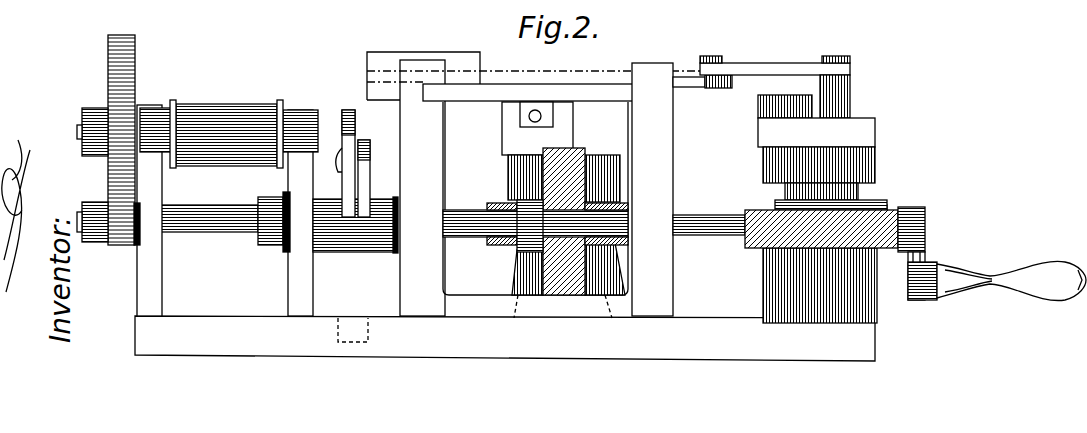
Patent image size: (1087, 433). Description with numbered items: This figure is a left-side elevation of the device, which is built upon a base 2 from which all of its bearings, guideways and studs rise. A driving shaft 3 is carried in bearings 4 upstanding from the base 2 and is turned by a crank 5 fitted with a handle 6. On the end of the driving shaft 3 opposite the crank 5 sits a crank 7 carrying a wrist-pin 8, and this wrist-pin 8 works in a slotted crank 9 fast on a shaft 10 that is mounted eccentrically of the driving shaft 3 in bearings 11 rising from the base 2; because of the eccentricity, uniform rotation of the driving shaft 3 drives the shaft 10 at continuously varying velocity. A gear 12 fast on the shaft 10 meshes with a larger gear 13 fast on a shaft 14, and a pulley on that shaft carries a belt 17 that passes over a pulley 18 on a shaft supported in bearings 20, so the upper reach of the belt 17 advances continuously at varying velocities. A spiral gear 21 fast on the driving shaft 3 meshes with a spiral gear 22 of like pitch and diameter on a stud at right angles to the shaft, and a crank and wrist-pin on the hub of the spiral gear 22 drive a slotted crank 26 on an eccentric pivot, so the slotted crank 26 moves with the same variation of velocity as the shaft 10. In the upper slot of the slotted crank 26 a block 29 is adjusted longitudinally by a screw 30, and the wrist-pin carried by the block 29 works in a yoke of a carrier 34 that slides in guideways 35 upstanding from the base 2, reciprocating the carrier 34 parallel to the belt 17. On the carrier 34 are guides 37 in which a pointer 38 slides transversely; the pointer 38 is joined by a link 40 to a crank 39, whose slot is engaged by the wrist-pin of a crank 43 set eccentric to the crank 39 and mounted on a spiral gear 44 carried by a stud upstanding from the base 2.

The base 2 is at (505, 338).
The driving shaft 3 is at (722, 236).
The bearings 4 is at (393, 253).
The crank 5 is at (920, 253).
The handle 6 is at (1011, 280).
The crank 7 is at (366, 182).
The wrist-pin 8 is at (338, 156).
The slotted crank 9 is at (348, 135).
The shaft 10 is at (228, 224).
The bearings 11 is at (136, 246).
The gear 12 is at (113, 205).
The gear 13 is at (110, 85).
The shaft 14 is at (80, 131).
The belt 17 is at (242, 118).
The pulley 18 is at (277, 168).
The bearings 20 is at (157, 112).
The spiral gear 21 is at (578, 150).
The spiral gear 22 is at (500, 203).
The slotted crank 26 is at (512, 133).
The block 29 is at (527, 125).
The screw 30 is at (538, 110).
The carrier 34 is at (538, 92).
The guideways 35 is at (422, 96).
The guides 37 is at (455, 68).
The pointer 38 is at (687, 77).
The crank 39 is at (816, 111).
The link 40 is at (762, 66).
The crank 43 is at (778, 175).
The spiral gear 44 is at (767, 243).